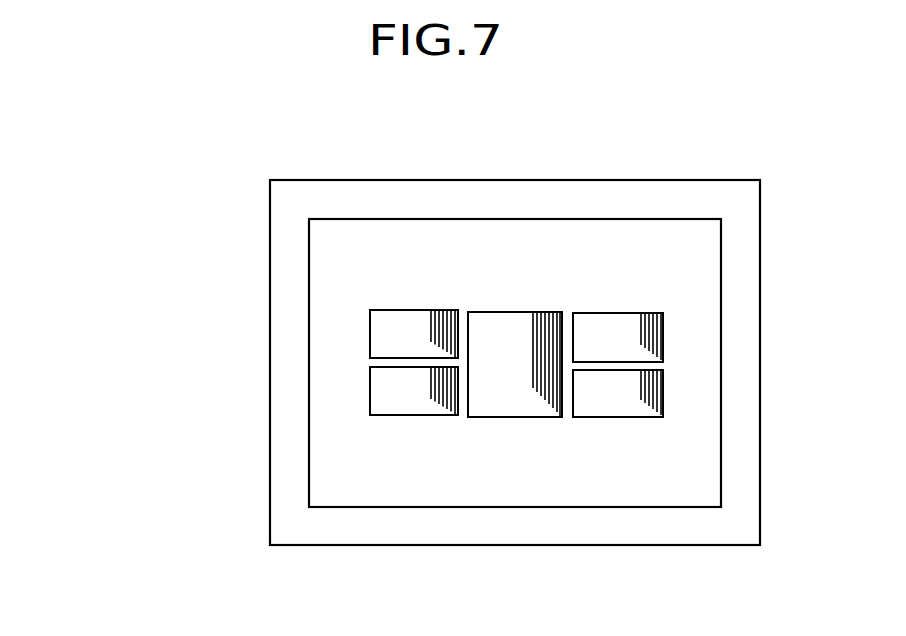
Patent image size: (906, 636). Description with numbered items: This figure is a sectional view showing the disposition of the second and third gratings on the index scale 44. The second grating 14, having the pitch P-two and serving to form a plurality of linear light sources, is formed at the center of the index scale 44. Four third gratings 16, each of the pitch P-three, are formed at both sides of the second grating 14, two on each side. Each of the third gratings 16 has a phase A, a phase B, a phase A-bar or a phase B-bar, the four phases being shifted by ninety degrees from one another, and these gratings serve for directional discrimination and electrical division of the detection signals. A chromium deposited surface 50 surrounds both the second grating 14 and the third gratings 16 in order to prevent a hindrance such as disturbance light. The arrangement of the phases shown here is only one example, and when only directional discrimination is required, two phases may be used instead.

The index scale 44 is at (327, 179).
The chromium deposited surface 50 is at (703, 425).
The second grating 14 is at (475, 315).
The third gratings 16 is at (50, 414).